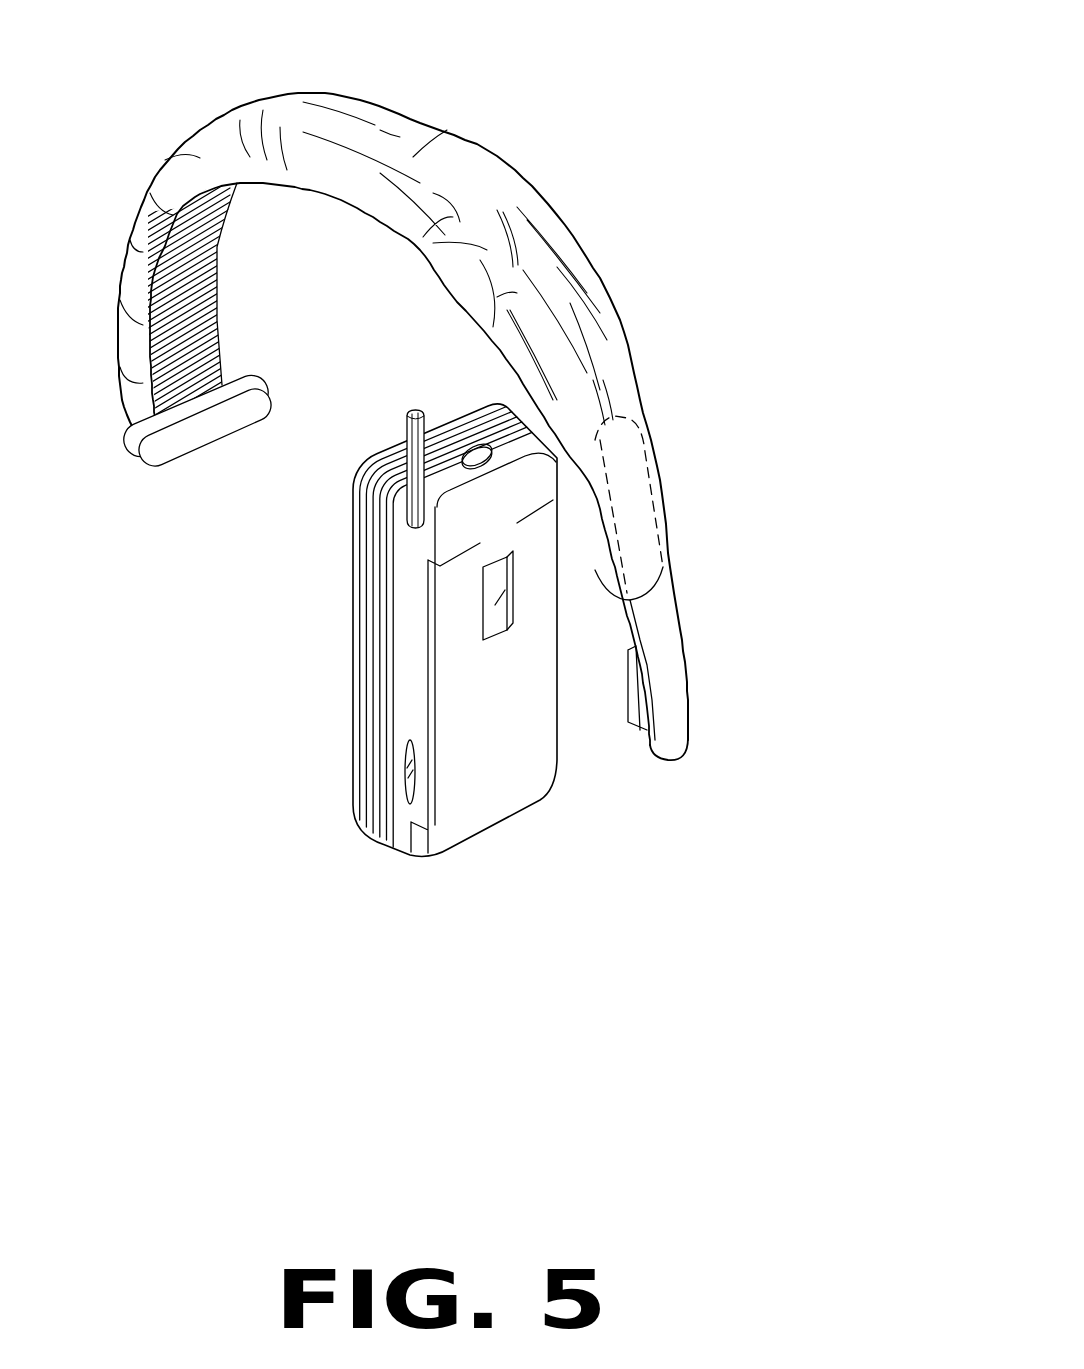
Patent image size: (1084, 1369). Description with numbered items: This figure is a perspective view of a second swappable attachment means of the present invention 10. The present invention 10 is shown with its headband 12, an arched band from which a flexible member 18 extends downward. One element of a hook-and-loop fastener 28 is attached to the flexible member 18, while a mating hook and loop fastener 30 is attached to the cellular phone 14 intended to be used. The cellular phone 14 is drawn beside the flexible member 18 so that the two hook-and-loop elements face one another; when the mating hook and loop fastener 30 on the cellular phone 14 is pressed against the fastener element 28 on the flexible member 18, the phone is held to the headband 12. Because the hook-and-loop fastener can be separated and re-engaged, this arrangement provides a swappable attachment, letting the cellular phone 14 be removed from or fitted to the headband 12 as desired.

The present invention 10 is at (704, 296).
The headband 12 is at (333, 100).
The cellular phone 14 is at (372, 837).
The flexible member 18 is at (685, 747).
The hook-and-loop fastener element 28 is at (637, 678).
The mating hook and loop fastener 30 is at (627, 667).